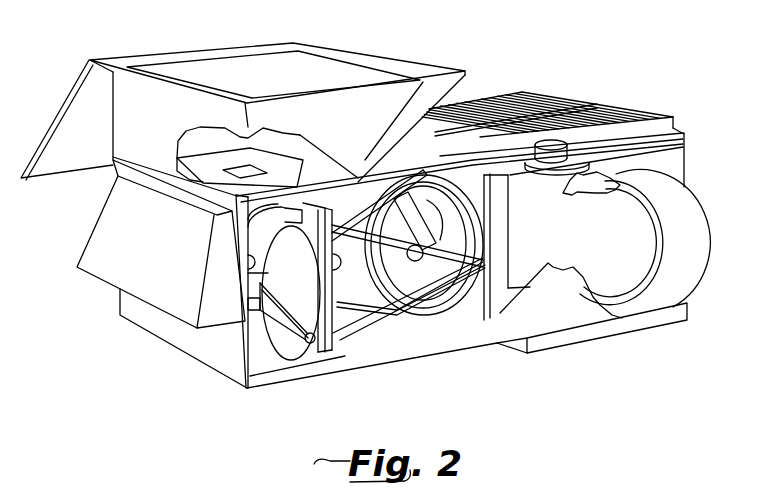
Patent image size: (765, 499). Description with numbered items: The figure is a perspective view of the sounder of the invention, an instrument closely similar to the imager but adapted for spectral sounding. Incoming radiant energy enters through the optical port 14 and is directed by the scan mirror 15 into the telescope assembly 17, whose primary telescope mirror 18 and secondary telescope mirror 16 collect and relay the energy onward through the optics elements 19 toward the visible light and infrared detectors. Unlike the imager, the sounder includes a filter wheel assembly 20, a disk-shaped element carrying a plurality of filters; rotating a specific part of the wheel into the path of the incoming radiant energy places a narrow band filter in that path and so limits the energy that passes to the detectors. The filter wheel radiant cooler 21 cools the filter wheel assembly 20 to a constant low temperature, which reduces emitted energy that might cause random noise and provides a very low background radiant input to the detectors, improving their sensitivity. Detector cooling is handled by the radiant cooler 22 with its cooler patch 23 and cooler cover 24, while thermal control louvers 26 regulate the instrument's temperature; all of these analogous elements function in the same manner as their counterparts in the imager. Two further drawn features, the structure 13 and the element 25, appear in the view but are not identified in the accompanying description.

The housing 13 is at (677, 157).
The optical port 14 is at (653, 305).
The scan mirror 15 is at (630, 222).
The secondary telescope mirror 16 is at (416, 261).
The telescope assembly 17 is at (380, 316).
The primary telescope mirror 18 is at (306, 306).
The optics elements 19 is at (260, 342).
The filter wheel assembly 20 is at (275, 210).
The filter wheel radiant cooler 21 is at (108, 270).
The radiant cooler 22 is at (195, 72).
The cooler patch 23 is at (262, 163).
The cooler cover 24 is at (62, 100).
The fuel cap 25 is at (548, 142).
The thermal control louvers 26 is at (592, 108).